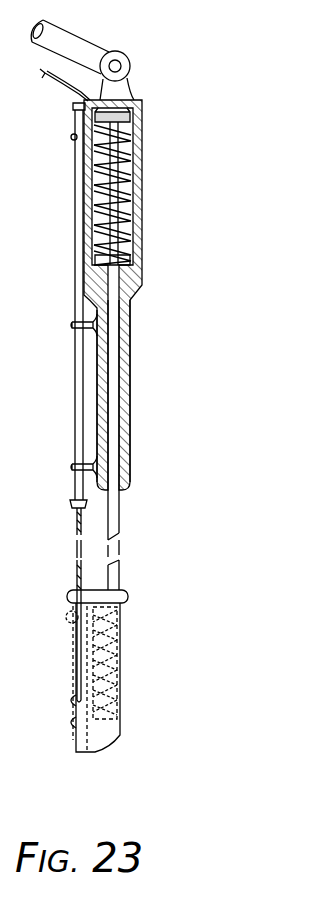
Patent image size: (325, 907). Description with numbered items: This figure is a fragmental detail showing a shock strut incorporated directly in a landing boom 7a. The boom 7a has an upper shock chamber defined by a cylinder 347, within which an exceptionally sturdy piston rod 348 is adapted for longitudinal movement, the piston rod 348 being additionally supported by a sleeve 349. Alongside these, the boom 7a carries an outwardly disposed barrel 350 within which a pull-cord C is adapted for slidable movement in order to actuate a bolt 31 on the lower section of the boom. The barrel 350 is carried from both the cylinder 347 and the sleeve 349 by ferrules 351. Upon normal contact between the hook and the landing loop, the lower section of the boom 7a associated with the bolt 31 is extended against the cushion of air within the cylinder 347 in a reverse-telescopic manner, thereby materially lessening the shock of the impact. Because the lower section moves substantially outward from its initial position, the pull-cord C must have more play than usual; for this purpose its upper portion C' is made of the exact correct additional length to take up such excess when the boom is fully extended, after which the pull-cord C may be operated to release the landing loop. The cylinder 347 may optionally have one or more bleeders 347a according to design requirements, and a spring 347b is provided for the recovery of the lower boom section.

The boom 7a is at (74, 192).
The bolt 31 is at (78, 739).
The cylinder 347 is at (142, 165).
The bleeder 347a is at (142, 130).
The spring 347b is at (142, 240).
The piston rod 348 is at (140, 222).
The sleeve 349 is at (130, 377).
The barrel 350 is at (83, 250).
The ferrule 351 is at (72, 325).
The pull-cord C is at (76, 671).
The upper portion of pull-cord C' is at (51, 93).